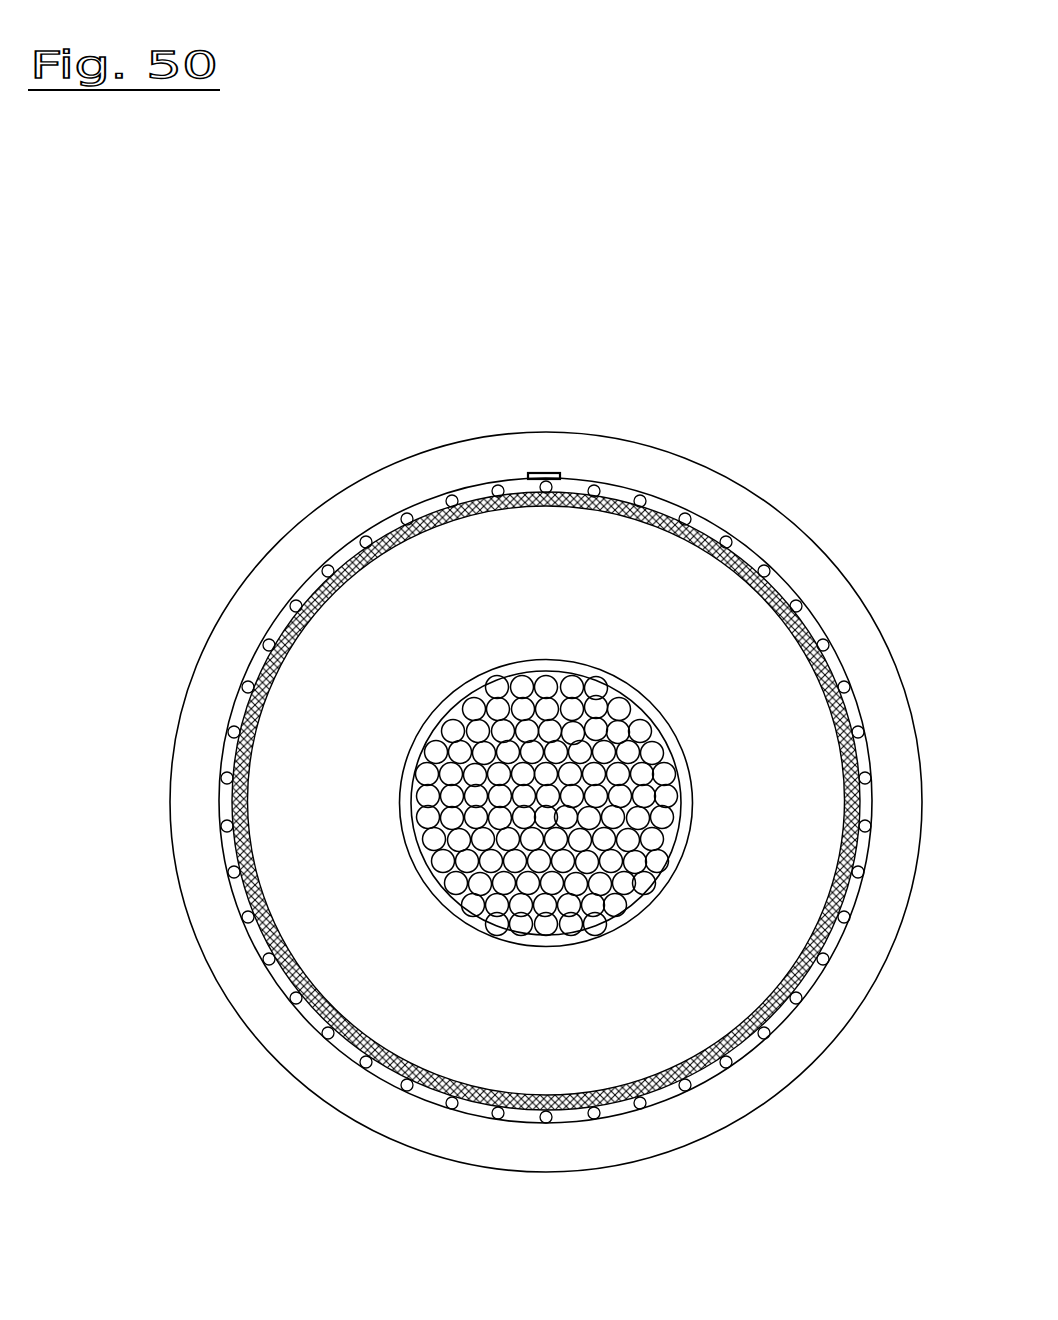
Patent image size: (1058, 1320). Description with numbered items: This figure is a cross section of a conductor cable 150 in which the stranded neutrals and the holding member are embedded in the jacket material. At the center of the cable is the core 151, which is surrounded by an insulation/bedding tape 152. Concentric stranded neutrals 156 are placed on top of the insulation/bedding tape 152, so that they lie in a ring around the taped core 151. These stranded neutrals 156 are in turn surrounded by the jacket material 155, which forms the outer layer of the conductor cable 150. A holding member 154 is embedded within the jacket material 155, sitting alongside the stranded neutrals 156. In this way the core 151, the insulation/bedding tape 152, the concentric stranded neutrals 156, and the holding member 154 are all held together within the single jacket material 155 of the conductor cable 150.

The conductor cable 150 is at (584, 187).
The core 151 is at (377, 783).
The insulation/bedding tape 152 is at (467, 801).
The holding member 154 is at (483, 429).
The jacket material 155 is at (545, 744).
The concentric stranded neutrals 156 is at (481, 791).